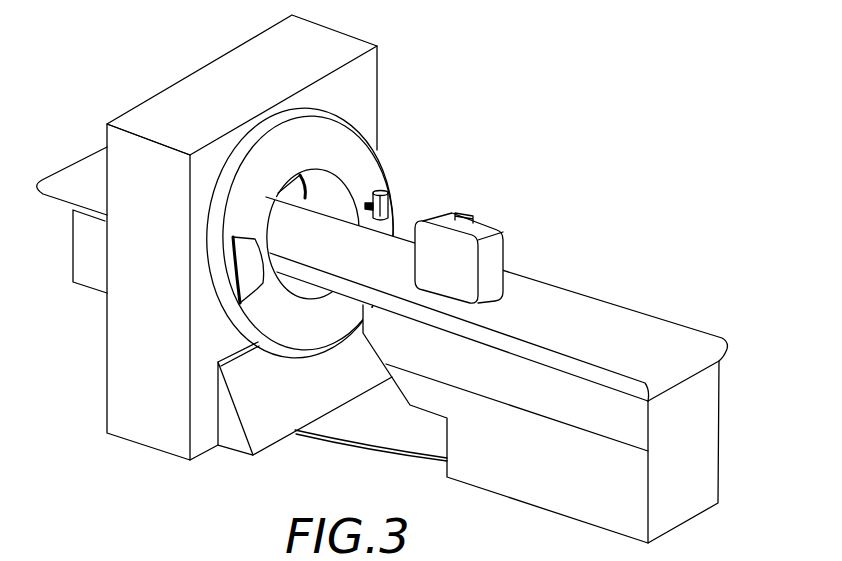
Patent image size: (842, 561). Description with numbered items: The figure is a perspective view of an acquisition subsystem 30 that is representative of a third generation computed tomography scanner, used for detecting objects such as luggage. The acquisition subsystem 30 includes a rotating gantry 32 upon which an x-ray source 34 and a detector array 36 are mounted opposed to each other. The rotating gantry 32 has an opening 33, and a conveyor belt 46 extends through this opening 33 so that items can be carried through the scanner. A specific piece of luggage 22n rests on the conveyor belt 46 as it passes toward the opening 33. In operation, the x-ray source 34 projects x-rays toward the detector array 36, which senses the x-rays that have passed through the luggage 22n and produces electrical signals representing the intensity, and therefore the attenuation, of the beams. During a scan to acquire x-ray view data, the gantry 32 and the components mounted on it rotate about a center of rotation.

The acquisition subsystem 30 is at (415, 93).
The rotating gantry 32 is at (134, 158).
The opening 33 is at (277, 203).
The x-ray source 34 is at (388, 204).
The detector array 36 is at (247, 287).
The luggage 22n is at (488, 240).
The conveyor belt 46 is at (567, 310).